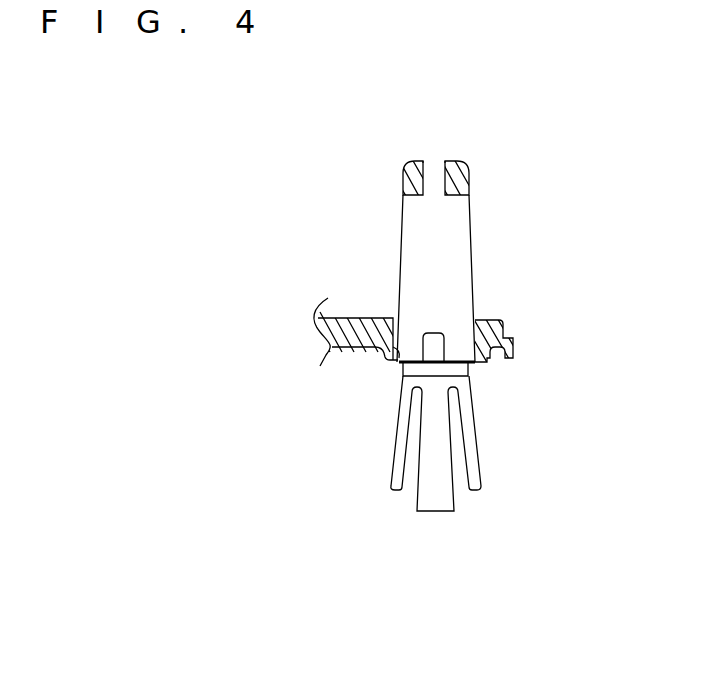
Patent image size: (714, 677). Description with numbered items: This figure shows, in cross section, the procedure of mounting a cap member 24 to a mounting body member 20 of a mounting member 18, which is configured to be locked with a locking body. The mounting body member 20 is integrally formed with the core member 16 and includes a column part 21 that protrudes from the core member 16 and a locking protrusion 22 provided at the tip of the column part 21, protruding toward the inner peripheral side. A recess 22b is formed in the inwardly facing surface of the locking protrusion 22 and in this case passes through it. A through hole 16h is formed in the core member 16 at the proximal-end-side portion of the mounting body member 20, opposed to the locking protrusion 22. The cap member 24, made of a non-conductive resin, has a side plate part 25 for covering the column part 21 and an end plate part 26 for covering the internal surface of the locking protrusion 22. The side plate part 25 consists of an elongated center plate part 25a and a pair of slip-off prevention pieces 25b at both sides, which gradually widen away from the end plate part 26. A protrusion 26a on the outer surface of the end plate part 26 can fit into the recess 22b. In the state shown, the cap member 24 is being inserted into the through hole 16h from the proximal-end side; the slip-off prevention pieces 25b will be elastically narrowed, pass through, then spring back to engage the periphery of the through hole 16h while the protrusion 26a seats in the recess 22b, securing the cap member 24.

The core member 16 is at (488, 320).
The through hole 16h is at (399, 358).
The mounting member 18 is at (437, 154).
The mounting body member 20 is at (468, 179).
The column part 21 is at (455, 252).
The locking protrusion 22 is at (403, 178).
The recess 22b is at (433, 161).
The cap member 24 is at (453, 509).
The side plate part 25 is at (444, 509).
The center plate part 25a is at (446, 491).
The slip-off prevention piece 25b is at (393, 492).
The end plate part 26 is at (436, 329).
The protrusion 26a is at (435, 334).